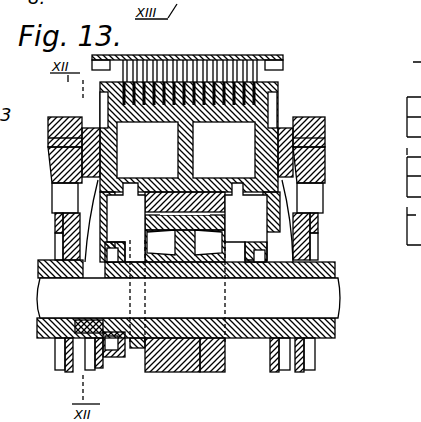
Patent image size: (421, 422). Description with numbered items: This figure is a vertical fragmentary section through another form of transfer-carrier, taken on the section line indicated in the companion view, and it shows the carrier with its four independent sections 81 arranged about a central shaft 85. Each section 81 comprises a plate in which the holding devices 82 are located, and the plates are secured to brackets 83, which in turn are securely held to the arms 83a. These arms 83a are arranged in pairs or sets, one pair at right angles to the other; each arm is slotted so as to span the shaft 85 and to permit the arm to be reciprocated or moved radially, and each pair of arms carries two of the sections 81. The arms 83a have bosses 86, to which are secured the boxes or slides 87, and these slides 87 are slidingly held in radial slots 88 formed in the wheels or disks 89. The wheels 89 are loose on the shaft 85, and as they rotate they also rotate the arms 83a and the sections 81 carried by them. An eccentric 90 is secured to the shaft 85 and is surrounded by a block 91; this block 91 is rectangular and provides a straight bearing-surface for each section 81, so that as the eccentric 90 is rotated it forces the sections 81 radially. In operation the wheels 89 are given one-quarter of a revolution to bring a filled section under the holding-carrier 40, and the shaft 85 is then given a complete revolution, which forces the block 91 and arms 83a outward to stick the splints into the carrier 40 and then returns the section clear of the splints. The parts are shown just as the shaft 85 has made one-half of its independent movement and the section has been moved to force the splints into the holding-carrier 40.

The holding-carrier 40 is at (268, 57).
The holding devices 82 is at (258, 83).
The sections 81 is at (157, 125).
The brackets 83 is at (216, 178).
The arms 83a is at (268, 211).
The shaft 85 is at (333, 300).
The bosses 86 is at (85, 128).
The boxes or slides 87 is at (50, 180).
The radial slots 88 is at (62, 205).
The wheels or disks 89 is at (63, 373).
The eccentric 90 is at (175, 373).
The block 91 is at (222, 373).